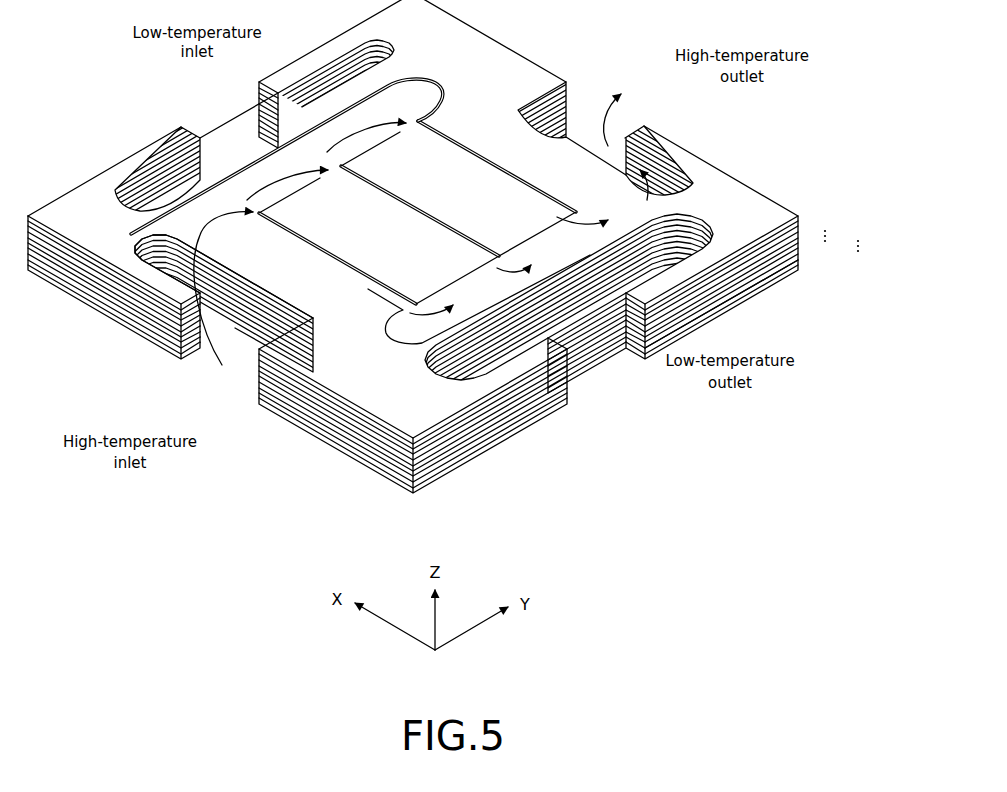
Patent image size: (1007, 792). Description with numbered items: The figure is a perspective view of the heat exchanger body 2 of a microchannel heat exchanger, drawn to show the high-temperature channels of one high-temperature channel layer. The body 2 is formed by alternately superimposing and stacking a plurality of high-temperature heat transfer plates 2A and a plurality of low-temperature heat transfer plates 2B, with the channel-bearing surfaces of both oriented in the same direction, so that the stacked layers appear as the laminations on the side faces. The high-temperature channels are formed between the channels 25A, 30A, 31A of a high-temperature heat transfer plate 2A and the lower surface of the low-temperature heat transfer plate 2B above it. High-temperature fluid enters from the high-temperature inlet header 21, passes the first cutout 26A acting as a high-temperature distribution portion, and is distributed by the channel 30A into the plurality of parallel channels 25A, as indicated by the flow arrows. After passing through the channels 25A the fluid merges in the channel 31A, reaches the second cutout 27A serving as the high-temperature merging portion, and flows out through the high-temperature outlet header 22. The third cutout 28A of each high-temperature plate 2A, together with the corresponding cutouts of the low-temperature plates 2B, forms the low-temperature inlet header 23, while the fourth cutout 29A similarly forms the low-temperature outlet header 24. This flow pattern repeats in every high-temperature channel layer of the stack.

The heat exchanger body 2 is at (789, 113).
The high-temperature heat transfer plate 2A is at (802, 217).
The low-temperature heat transfer plate 2B is at (802, 262).
The high-temperature inlet header 21 is at (214, 382).
The high-temperature outlet header 22 is at (627, 112).
The low-temperature inlet header 23 is at (195, 108).
The low-temperature outlet header 24 is at (606, 366).
The channels 25A is at (458, 150).
The first cutout 26A is at (252, 338).
The second cutout 27A is at (568, 83).
The third cutout 28A is at (266, 108).
The fourth cutout 29A is at (568, 346).
The channel 30A is at (418, 90).
The channel 31A is at (400, 332).